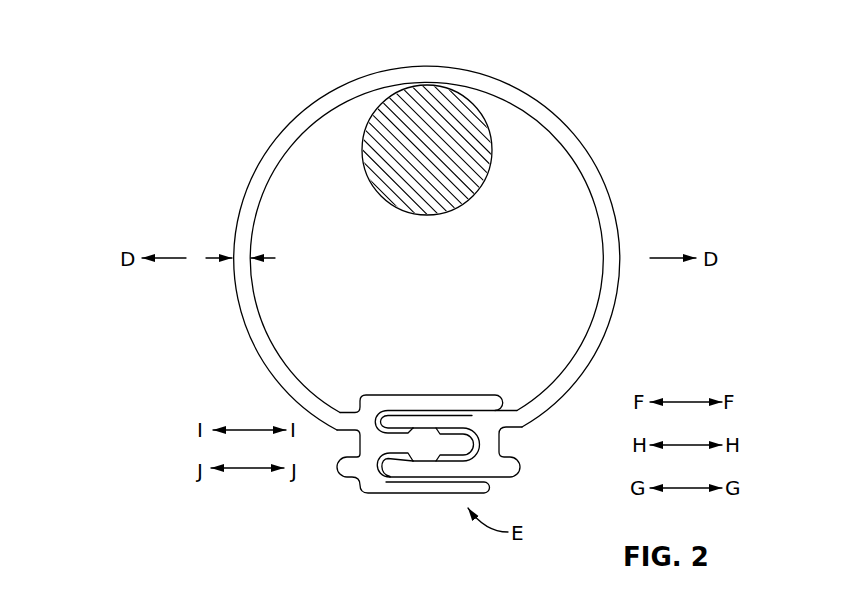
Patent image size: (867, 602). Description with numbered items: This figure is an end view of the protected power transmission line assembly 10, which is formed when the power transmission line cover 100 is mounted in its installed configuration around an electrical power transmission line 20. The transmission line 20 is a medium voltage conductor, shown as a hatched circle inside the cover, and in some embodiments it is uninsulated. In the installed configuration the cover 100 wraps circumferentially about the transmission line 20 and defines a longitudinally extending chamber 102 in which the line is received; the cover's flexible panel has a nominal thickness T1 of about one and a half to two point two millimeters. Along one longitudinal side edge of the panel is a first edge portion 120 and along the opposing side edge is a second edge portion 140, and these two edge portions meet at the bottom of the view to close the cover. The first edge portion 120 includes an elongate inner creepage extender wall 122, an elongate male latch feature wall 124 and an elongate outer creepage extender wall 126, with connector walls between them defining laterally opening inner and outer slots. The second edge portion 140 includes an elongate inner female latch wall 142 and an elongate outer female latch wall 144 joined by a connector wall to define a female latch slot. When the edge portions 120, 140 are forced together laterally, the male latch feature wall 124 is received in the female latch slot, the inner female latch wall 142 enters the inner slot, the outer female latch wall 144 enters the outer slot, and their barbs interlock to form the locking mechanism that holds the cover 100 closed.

The protected power transmission line assembly 10 is at (283, 61).
The electrical power transmission line 20 is at (430, 110).
The power transmission line cover 100 is at (574, 92).
The chamber 102 is at (443, 276).
The first edge portion 120 is at (350, 489).
The inner creepage extender wall 122 is at (439, 401).
The male latch feature wall 124 is at (428, 442).
The outer creepage extender wall 126 is at (393, 486).
The second edge portion 140 is at (518, 449).
The inner female latch wall 142 is at (464, 418).
The outer female latch wall 144 is at (445, 468).
The nominal thickness T1 is at (214, 259).